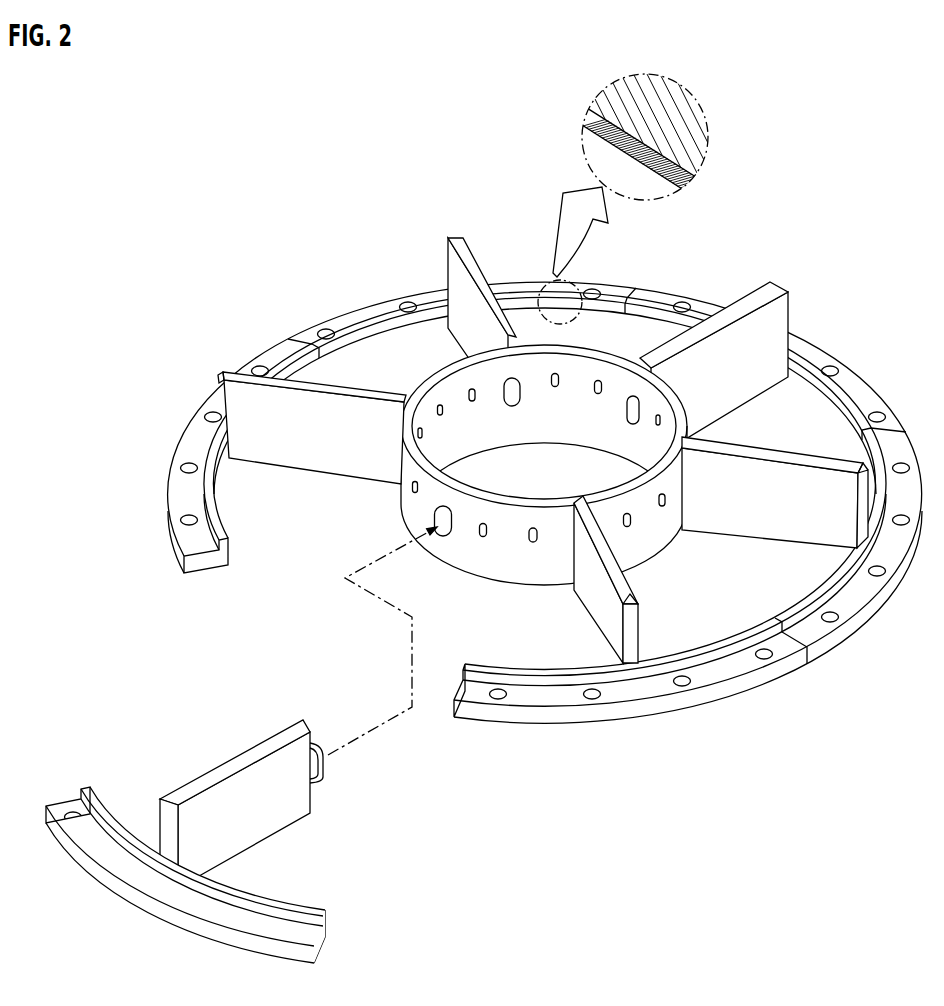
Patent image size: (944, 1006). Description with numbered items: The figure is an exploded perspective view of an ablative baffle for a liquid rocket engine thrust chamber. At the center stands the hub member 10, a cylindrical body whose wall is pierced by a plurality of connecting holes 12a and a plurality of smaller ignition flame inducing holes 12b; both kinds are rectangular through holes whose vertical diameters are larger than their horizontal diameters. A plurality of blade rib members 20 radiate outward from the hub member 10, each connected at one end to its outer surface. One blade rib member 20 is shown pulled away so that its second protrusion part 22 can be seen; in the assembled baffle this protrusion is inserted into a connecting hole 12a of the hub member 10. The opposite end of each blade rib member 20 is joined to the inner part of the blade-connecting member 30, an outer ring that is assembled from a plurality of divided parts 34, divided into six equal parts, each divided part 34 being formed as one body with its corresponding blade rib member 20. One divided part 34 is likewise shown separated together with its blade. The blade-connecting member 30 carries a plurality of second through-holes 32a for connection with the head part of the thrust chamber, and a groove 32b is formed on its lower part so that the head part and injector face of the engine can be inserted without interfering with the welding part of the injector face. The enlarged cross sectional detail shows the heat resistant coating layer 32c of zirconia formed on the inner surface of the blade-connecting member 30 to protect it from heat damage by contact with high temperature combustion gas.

The hub member 10 is at (432, 366).
The connecting hole 12a is at (510, 393).
The ignition flame inducing hole 12b is at (630, 526).
The blade rib member 20 is at (258, 722).
The second protrusion part 22 is at (326, 770).
The blade-connecting member 30 is at (722, 131).
The second through-hole 32a is at (832, 625).
The groove 32b is at (216, 578).
The heat resistant coating layer 32c is at (582, 130).
The divided part 34 is at (125, 920).